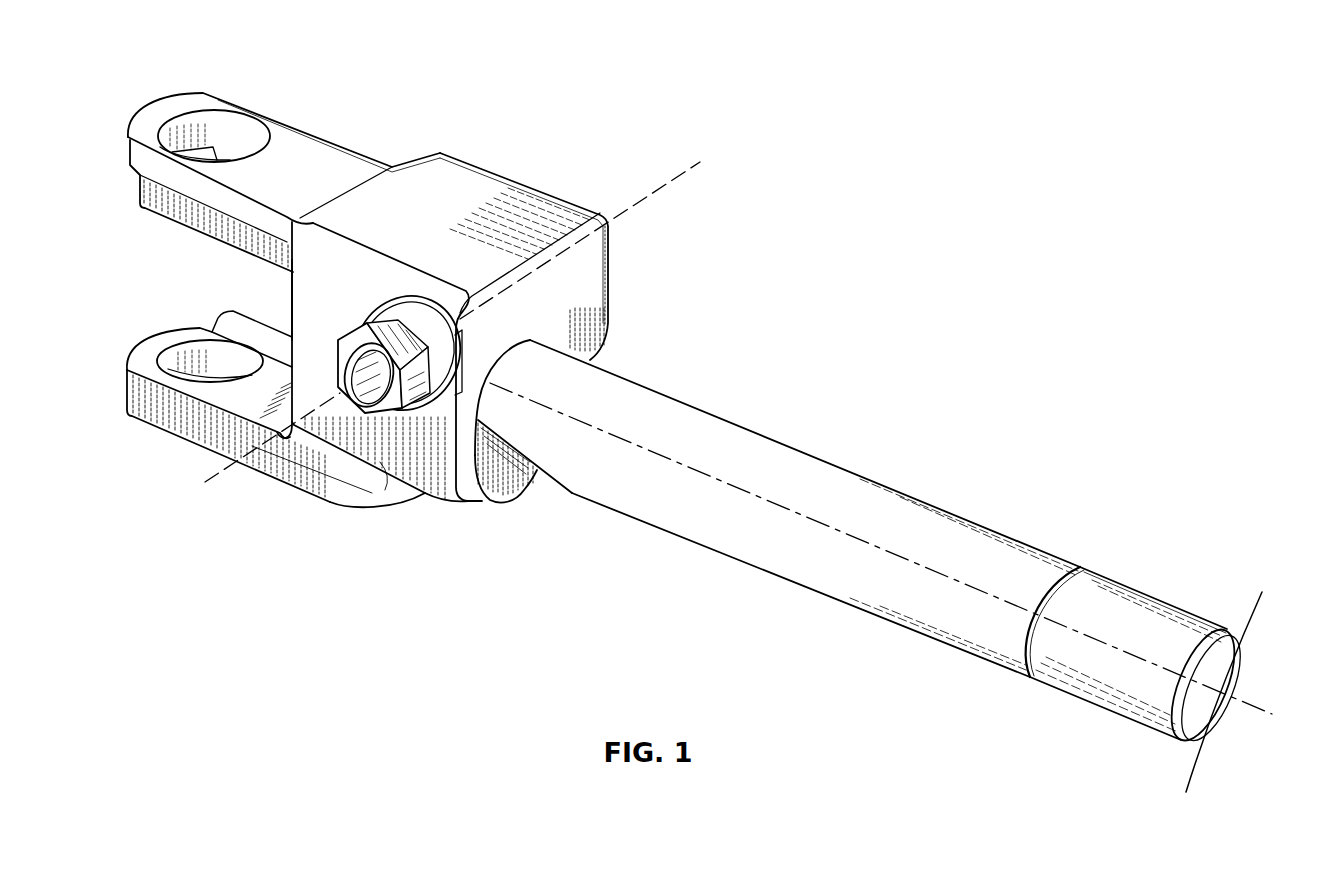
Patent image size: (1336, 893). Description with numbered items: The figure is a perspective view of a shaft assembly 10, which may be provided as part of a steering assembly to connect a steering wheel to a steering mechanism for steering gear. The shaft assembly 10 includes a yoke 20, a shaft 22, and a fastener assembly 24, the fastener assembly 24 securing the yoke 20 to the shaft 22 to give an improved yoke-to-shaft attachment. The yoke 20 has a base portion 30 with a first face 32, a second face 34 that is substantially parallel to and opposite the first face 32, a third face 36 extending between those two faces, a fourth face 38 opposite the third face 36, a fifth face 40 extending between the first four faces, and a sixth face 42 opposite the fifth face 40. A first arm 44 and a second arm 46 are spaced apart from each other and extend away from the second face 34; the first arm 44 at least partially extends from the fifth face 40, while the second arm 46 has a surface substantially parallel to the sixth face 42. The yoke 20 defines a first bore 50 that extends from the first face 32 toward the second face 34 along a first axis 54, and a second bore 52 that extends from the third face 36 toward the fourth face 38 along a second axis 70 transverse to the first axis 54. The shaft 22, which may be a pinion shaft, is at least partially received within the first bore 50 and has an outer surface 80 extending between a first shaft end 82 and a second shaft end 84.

The shaft assembly 10 is at (701, 404).
The yoke 20 is at (411, 291).
The shaft 22 is at (908, 566).
The fastener assembly 24 is at (401, 423).
The web plate 30 is at (449, 289).
The first face 32 is at (598, 285).
The second face 34 is at (291, 305).
The third face 36 is at (379, 434).
The fourth face 38 is at (613, 238).
The fifth face 40 is at (522, 488).
The sixth face 42 is at (498, 223).
The first arm 44 is at (152, 437).
The second arm 46 is at (246, 98).
The first bore 50 is at (540, 335).
The second bore 52 is at (406, 387).
The first axis 54 is at (1255, 700).
The second axis 70 is at (677, 181).
The outer surface 80 is at (812, 523).
The first shaft end 82 is at (508, 357).
The second shaft end 84 is at (1143, 612).